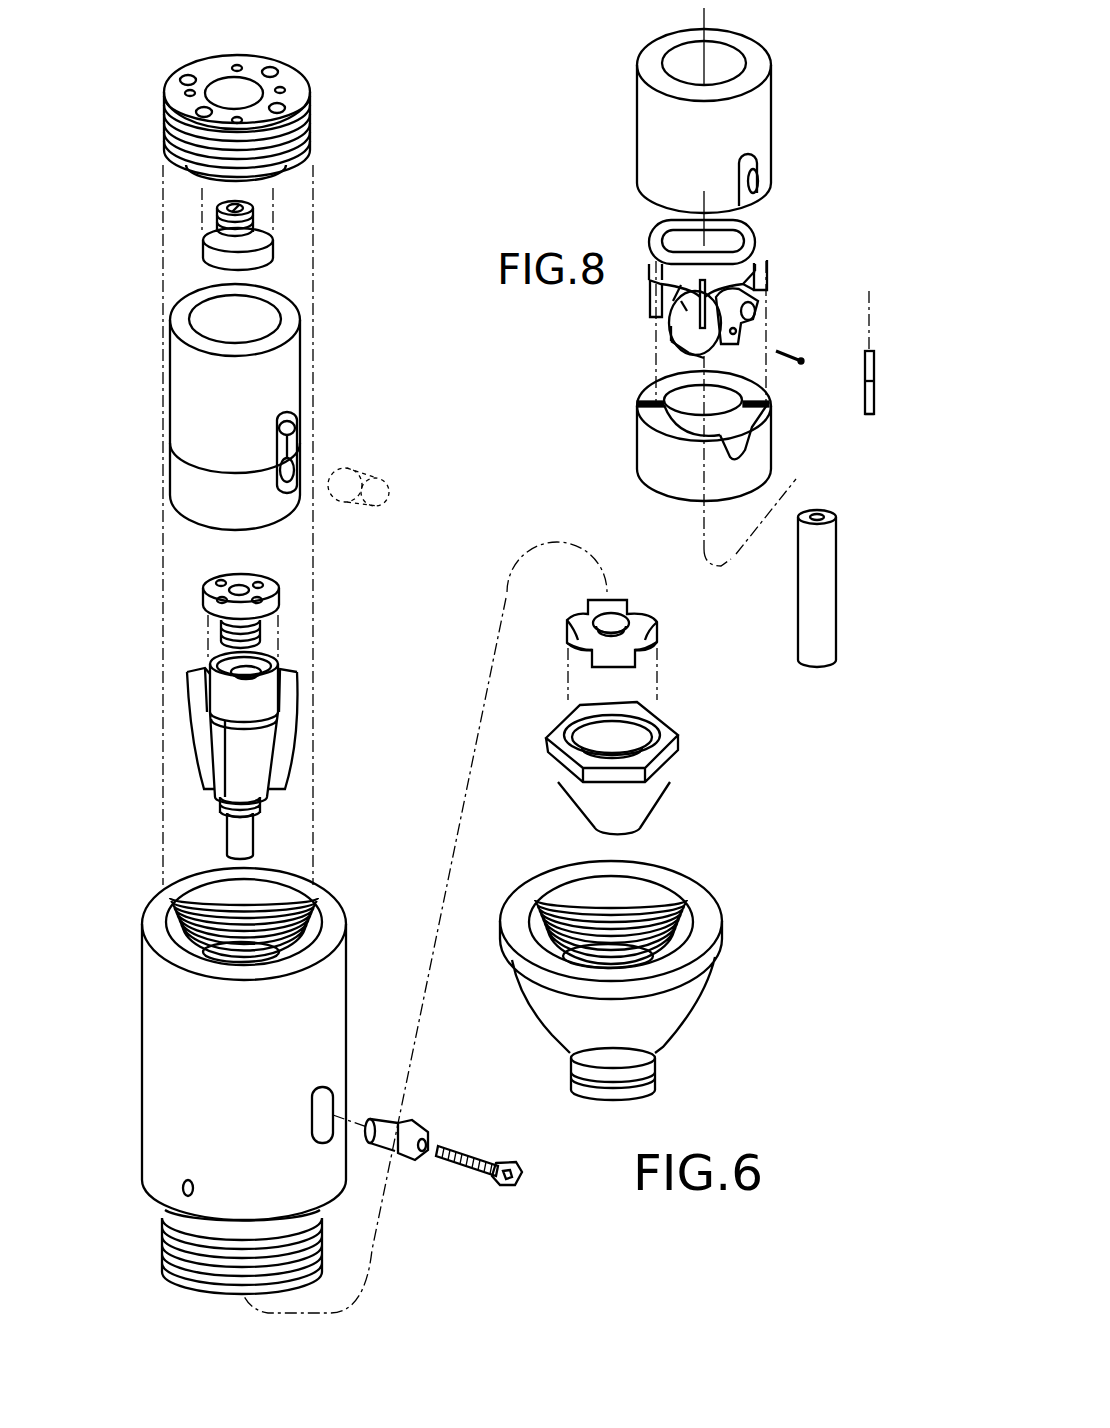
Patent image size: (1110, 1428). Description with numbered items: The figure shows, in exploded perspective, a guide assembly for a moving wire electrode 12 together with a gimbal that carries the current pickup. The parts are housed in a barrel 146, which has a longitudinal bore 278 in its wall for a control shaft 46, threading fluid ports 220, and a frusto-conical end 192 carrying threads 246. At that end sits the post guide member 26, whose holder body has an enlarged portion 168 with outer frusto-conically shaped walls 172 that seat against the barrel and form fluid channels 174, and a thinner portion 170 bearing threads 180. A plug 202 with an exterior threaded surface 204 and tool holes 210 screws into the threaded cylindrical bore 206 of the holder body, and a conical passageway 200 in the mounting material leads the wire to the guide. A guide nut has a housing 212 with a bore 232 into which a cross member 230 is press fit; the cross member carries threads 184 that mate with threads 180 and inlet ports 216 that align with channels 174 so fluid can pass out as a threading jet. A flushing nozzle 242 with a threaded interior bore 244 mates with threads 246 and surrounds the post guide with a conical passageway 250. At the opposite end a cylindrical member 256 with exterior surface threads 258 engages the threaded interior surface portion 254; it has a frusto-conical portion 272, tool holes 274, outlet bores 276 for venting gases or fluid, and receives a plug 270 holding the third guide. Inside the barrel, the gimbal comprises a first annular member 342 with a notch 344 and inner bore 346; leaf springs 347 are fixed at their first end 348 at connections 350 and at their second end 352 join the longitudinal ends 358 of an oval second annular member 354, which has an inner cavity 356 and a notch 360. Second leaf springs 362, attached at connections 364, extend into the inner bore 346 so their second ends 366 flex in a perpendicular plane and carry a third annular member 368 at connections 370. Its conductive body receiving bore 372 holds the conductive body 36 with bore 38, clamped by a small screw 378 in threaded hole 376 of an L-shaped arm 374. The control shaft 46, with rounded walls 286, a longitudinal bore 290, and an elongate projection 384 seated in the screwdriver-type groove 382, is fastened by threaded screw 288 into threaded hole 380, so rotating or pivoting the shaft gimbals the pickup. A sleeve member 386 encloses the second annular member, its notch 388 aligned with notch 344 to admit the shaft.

In FIG. 8, the wire electrode 12 is at (705, 6).
In FIG. 6, the post guide member 26 is at (247, 755).
In FIG. 6, the conductive body 36 is at (844, 572).
In FIG. 6, the conductive body bore 38 is at (818, 513).
In FIG. 6, the control shaft 46 is at (365, 467).
In FIG. 6, the barrel 146 is at (235, 1094).
In FIG. 6, the enlarged portion 168 is at (248, 746).
In FIG. 6, the thinner portion 170 is at (258, 828).
In FIG. 6, the outer frusto-conically shaped walls 172 is at (190, 732).
In FIG. 6, the fluid channels 174 is at (278, 763).
In FIG. 6, the threads 180 is at (260, 802).
In FIG. 6, the threads 184 is at (622, 630).
In FIG. 6, the frusto-conical end 192 is at (168, 1262).
In FIG. 6, the conical passageway 200 is at (241, 209).
In FIG. 6, the plug 202 is at (248, 596).
In FIG. 6, the exterior threaded surface 204 is at (256, 225).
In FIG. 6, the threaded cylindrical bore 206 is at (267, 690).
In FIG. 6, the tool holes 210 is at (215, 600).
In FIG. 6, the housing 212 is at (652, 768).
In FIG. 6, the inlet ports 216 is at (582, 648).
In FIG. 6, the threading fluid ports 220 is at (183, 1185).
In FIG. 6, the cross member 230 is at (622, 612).
In FIG. 6, the bore 232 is at (630, 742).
In FIG. 6, the flushing nozzle 242 is at (659, 980).
In FIG. 6, the threaded interior bore 244 is at (652, 903).
In FIG. 6, the threads 246 is at (163, 1233).
In FIG. 6, the conical passageway 250 is at (622, 960).
In FIG. 6, the threaded interior surface portion 254 is at (298, 915).
In FIG. 6, the cylindrical member 256 is at (248, 100).
In FIG. 6, the exterior surface threads 258 is at (307, 133).
In FIG. 6, the plug 270 is at (241, 421).
In FIG. 6, the frusto-conical portion 272 is at (226, 92).
In FIG. 6, the tool holes 274 is at (188, 76).
In FIG. 6, the outlet bores 276 is at (239, 66).
In FIG. 6, the longitudinal bore 278 is at (325, 1102).
In FIG. 6, the rounded walls 286 is at (382, 480).
In FIG. 6, the threaded screw 288 is at (477, 1157).
In FIG. 6, the longitudinal bore 290 is at (434, 1136).
In FIG. 6, the first annular member 342 is at (193, 488).
In FIG. 8, the first annular member 342 is at (716, 442).
In FIG. 6, the notch 344 is at (301, 477).
In FIG. 8, the notch 344 is at (760, 450).
In FIG. 8, the inner bore 346 is at (682, 405).
In FIG. 8, the leaf springs 347 is at (665, 305).
In FIG. 8, the first end 348 is at (678, 320).
In FIG. 8, the connections 350 is at (762, 407).
In FIG. 8, the second end 352 is at (870, 350).
In FIG. 8, the second annular member 354 is at (660, 272).
In FIG. 8, the inner cavity 356 is at (694, 251).
In FIG. 8, the longitudinal ends 358 is at (762, 248).
In FIG. 8, the notch 360 is at (752, 275).
In FIG. 8, the leaf springs 362 is at (690, 330).
In FIG. 8, the connections 364 is at (700, 252).
In FIG. 8, the second ends 366 is at (680, 350).
In FIG. 8, the third annular member 368 is at (745, 340).
In FIG. 8, the connections 370 is at (672, 352).
In FIG. 8, the conductive body receiving bore 372 is at (680, 318).
In FIG. 8, the L-shaped arm 374 is at (708, 287).
In FIG. 8, the threaded hole 376 is at (742, 333).
In FIG. 8, the small screw 378 is at (803, 362).
In FIG. 6, the threaded hole 380 is at (293, 447).
In FIG. 8, the threaded hole 380 is at (760, 317).
In FIG. 6, the screwdriver-type groove 382 is at (293, 453).
In FIG. 8, the screwdriver-type groove 382 is at (754, 303).
In FIG. 6, the elongate projection 384 is at (330, 482).
In FIG. 6, the sleeve member 386 is at (249, 415).
In FIG. 8, the sleeve member 386 is at (740, 121).
In FIG. 6, the notch 388 is at (293, 440).
In FIG. 8, the notch 388 is at (765, 195).